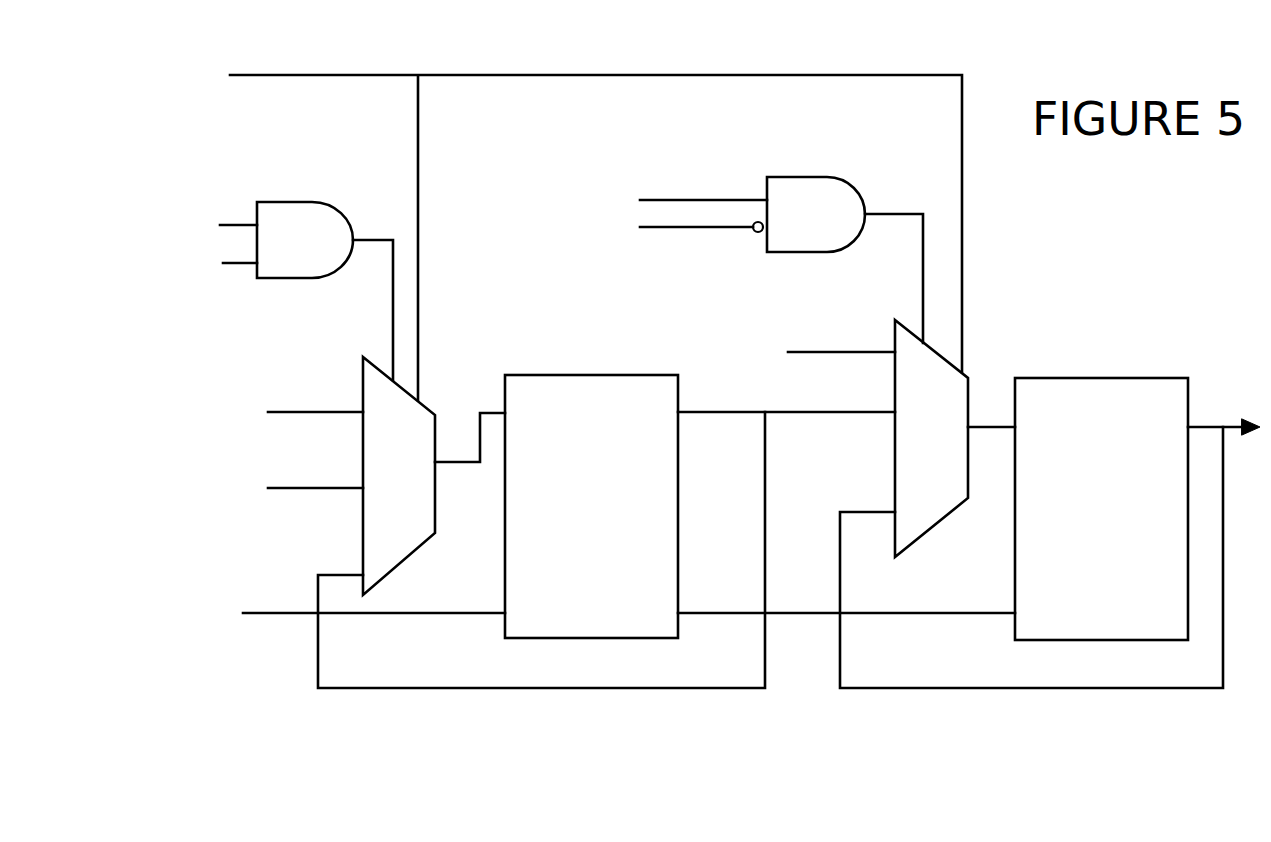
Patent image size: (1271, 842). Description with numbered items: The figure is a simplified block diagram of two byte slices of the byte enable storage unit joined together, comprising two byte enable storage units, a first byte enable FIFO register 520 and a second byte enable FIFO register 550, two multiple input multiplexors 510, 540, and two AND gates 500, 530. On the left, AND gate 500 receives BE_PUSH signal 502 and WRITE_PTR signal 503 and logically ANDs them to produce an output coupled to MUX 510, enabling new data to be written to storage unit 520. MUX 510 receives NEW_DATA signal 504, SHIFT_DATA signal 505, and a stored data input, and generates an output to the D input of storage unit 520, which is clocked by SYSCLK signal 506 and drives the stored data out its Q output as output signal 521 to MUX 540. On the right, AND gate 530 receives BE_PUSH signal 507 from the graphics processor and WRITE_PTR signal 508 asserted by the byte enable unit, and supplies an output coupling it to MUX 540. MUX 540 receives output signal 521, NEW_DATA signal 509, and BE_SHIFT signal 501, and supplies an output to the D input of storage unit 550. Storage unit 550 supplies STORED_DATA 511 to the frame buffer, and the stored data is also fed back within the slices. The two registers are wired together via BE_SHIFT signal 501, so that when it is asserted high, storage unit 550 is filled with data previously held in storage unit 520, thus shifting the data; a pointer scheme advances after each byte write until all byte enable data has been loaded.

The AND gate 500 is at (308, 258).
The BE_SHIFT signal 501 is at (529, 219).
The BE_PUSH signal 502 is at (171, 197).
The WRITE_PTR signal 503 is at (162, 283).
The NEW_DATA signal 504 is at (230, 420).
The SHIFT_DATA signal 505 is at (224, 507).
The SYSCLK signal 506 is at (562, 623).
The BE_PUSH signal 507 is at (629, 185).
The WRITE_PTR signal 508 is at (621, 239).
The NEW_DATA signal 509 is at (780, 332).
The multiple input multiplexor 510 is at (422, 517).
The STORED_DATA signal 511 is at (770, 550).
The BE_FIFO_1 byte enable storage unit 520 is at (633, 632).
The output signal 521 is at (800, 412).
The AND gate 530 is at (822, 230).
The multiple input multiplexor 540 is at (957, 482).
The BE_FIFO_0 byte enable storage unit 550 is at (1157, 637).